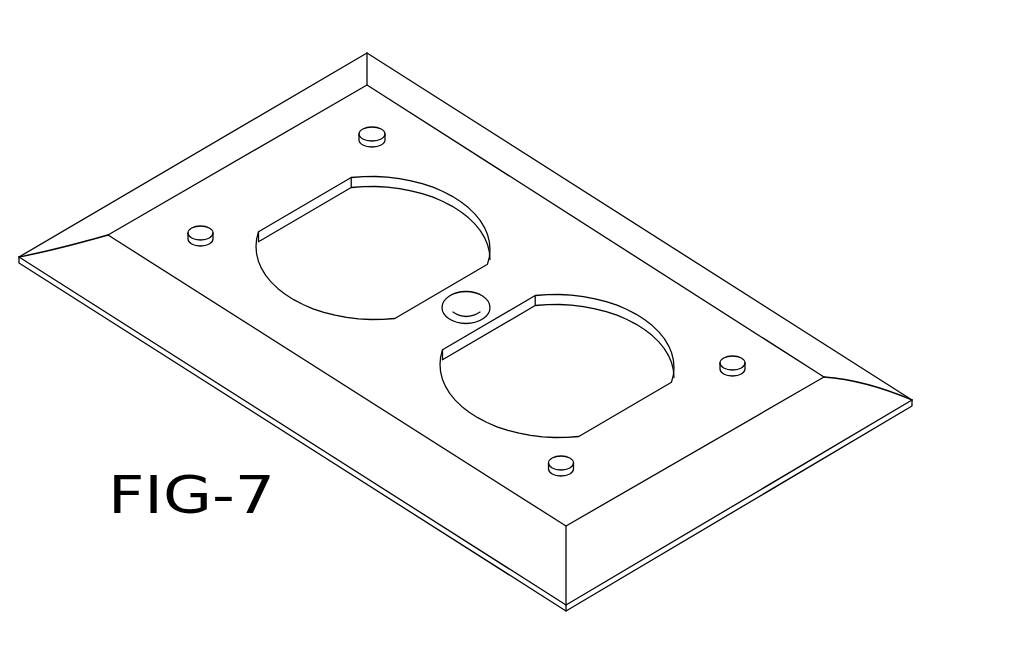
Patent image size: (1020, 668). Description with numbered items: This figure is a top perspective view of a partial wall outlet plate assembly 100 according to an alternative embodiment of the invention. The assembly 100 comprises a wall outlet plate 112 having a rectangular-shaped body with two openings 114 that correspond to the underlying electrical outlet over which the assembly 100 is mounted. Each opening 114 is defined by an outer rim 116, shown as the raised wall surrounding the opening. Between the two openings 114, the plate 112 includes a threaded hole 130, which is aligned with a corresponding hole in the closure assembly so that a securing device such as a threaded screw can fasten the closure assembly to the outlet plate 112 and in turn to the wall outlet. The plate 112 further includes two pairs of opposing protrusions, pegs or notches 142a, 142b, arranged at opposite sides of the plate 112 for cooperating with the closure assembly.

The wall outlet plate assembly 100 is at (465, 329).
The wall outlet plate 112 is at (745, 462).
The openings 114 is at (430, 222).
The outer rim 116 is at (573, 300).
The threaded hole 130 is at (465, 318).
The notches 142a is at (733, 362).
The notches 142b is at (195, 231).